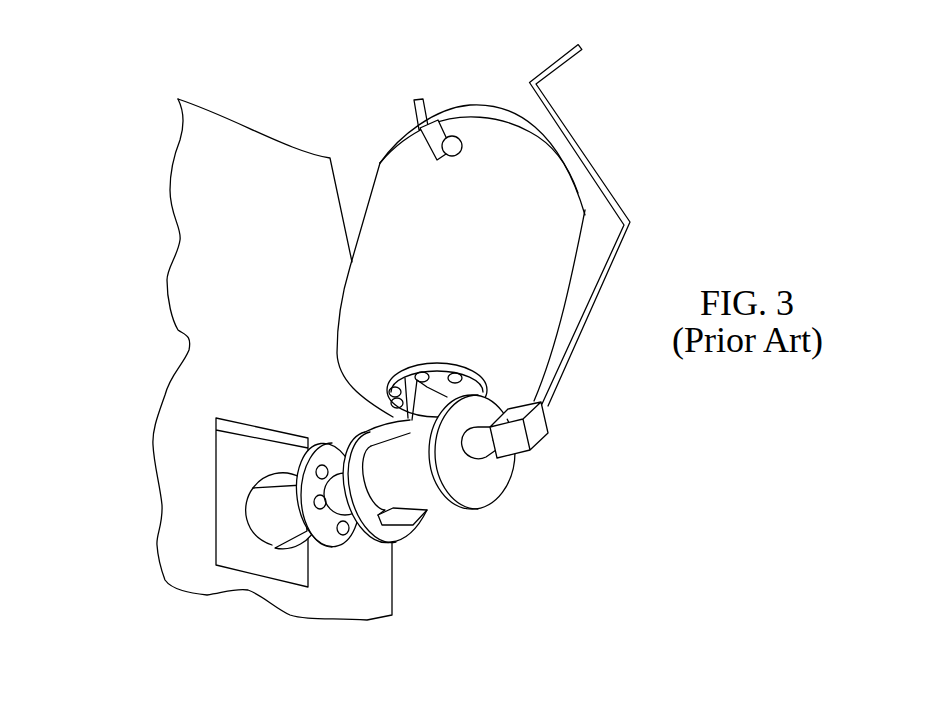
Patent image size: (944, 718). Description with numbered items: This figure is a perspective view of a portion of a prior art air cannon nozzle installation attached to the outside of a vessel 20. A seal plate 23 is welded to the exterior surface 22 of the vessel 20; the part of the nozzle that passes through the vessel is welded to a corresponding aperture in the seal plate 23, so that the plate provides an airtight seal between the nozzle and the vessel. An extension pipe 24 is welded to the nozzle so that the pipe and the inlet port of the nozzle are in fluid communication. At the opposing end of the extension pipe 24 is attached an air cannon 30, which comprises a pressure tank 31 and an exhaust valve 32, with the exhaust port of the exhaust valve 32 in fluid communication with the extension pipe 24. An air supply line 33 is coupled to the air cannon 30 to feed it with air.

The vessel 20 is at (221, 389).
The exterior surface 22 is at (191, 521).
The seal plate 23 is at (226, 560).
The extension pipe 24 is at (287, 528).
The air cannon 30 is at (537, 343).
The pressure tank 31 is at (474, 117).
The exhaust valve 32 is at (432, 492).
The air supply line 33 is at (582, 150).